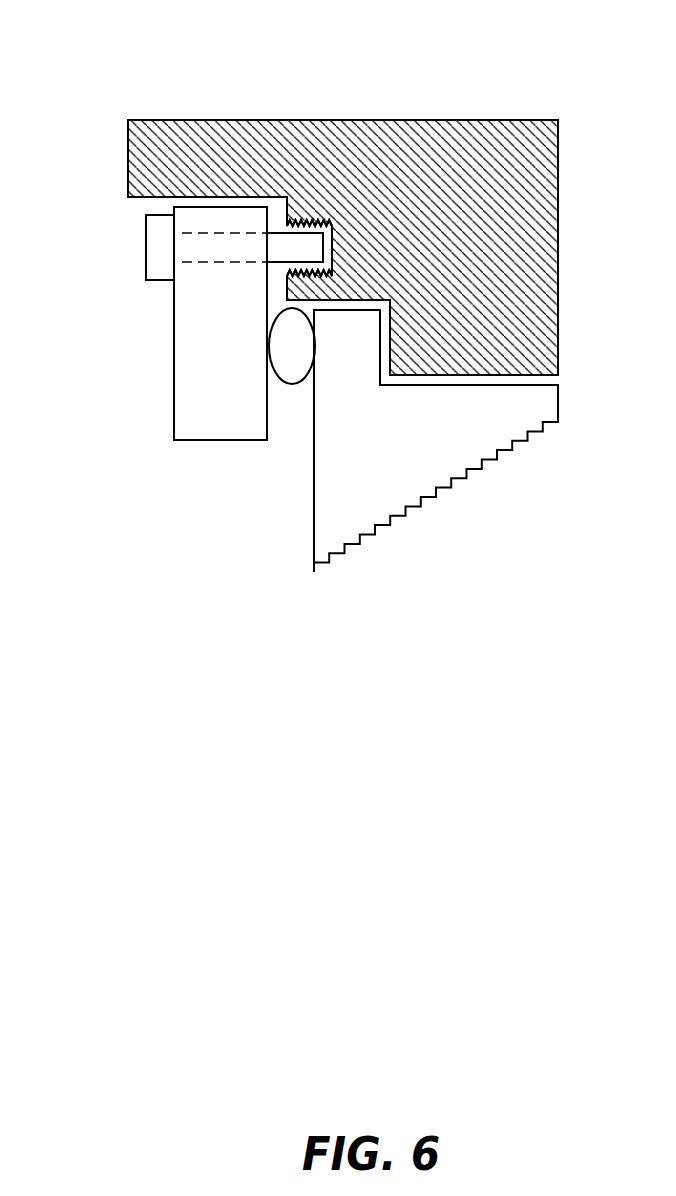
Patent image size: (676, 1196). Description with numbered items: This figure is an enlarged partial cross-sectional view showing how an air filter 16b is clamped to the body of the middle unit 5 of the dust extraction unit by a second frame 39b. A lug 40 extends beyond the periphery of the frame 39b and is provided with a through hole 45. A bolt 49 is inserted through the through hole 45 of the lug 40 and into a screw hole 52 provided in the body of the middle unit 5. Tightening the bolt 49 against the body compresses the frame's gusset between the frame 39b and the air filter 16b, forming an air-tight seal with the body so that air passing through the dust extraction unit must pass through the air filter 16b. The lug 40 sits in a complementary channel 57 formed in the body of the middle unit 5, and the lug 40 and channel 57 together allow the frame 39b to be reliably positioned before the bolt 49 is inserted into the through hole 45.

The middle unit 5 is at (445, 138).
The screw hole 52 is at (313, 218).
The second frame 39b is at (186, 384).
The lug 40 is at (214, 215).
The bolt 49 is at (156, 249).
The through hole 45 is at (247, 253).
The air filter 16b is at (323, 495).
The channel 57 is at (118, 211).